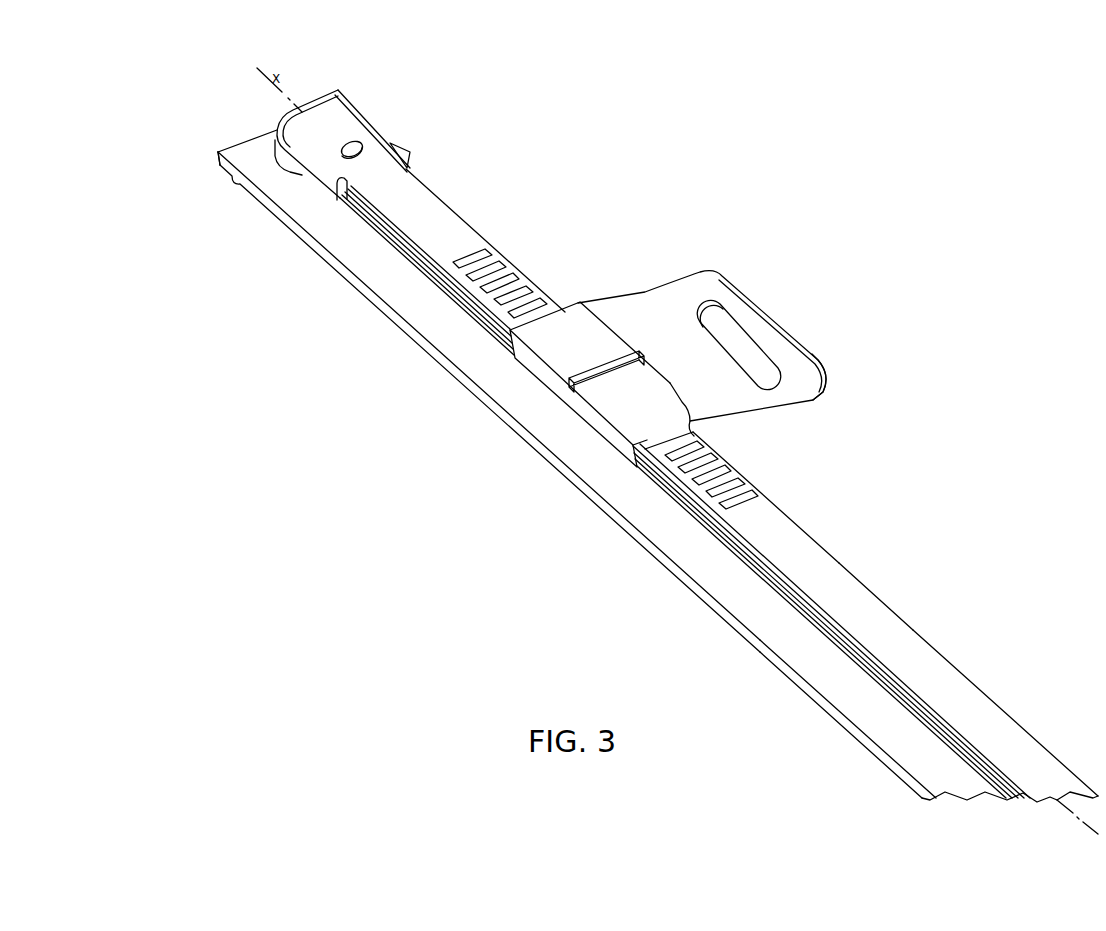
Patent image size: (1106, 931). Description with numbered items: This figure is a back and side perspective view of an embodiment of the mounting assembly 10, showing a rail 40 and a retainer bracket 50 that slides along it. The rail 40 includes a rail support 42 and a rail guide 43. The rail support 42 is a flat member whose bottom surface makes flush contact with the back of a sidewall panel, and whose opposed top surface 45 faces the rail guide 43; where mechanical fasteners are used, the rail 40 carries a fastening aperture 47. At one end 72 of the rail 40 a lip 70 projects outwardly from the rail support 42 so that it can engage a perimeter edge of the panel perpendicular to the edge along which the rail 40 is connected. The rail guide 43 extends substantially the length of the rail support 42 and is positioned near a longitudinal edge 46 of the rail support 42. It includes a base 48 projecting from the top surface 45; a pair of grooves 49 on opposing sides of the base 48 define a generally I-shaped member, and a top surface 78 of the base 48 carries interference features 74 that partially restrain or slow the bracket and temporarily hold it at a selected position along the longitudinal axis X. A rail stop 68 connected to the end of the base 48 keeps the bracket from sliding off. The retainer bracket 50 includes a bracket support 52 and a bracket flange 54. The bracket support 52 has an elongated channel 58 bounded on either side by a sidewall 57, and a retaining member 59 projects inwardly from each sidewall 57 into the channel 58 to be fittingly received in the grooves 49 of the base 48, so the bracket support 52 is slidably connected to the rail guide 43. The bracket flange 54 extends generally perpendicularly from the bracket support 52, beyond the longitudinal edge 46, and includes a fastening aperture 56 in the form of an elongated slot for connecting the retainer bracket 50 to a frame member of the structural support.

The cutting system 10 is at (298, 565).
The rail 40 is at (372, 322).
The rail support 42 is at (299, 229).
The rail guide 43 is at (862, 596).
The top surface 45 is at (737, 611).
The longitudinal edge 46 is at (452, 202).
The fastening aperture 47 is at (356, 146).
The base 48 is at (976, 688).
The grooves 49 is at (702, 510).
The retainer bracket 50 is at (685, 237).
The bracket support 52 is at (572, 318).
The bracket flange 54 is at (830, 370).
The fastening aperture 56 is at (724, 338).
The sidewall 57 is at (607, 433).
The channel 58 is at (683, 430).
The retaining member 59 is at (648, 462).
The rail stop 68 is at (360, 106).
The lip 70 is at (227, 184).
The end 72 is at (188, 178).
The interference features 74 is at (498, 260).
The top surface 78 is at (810, 544).